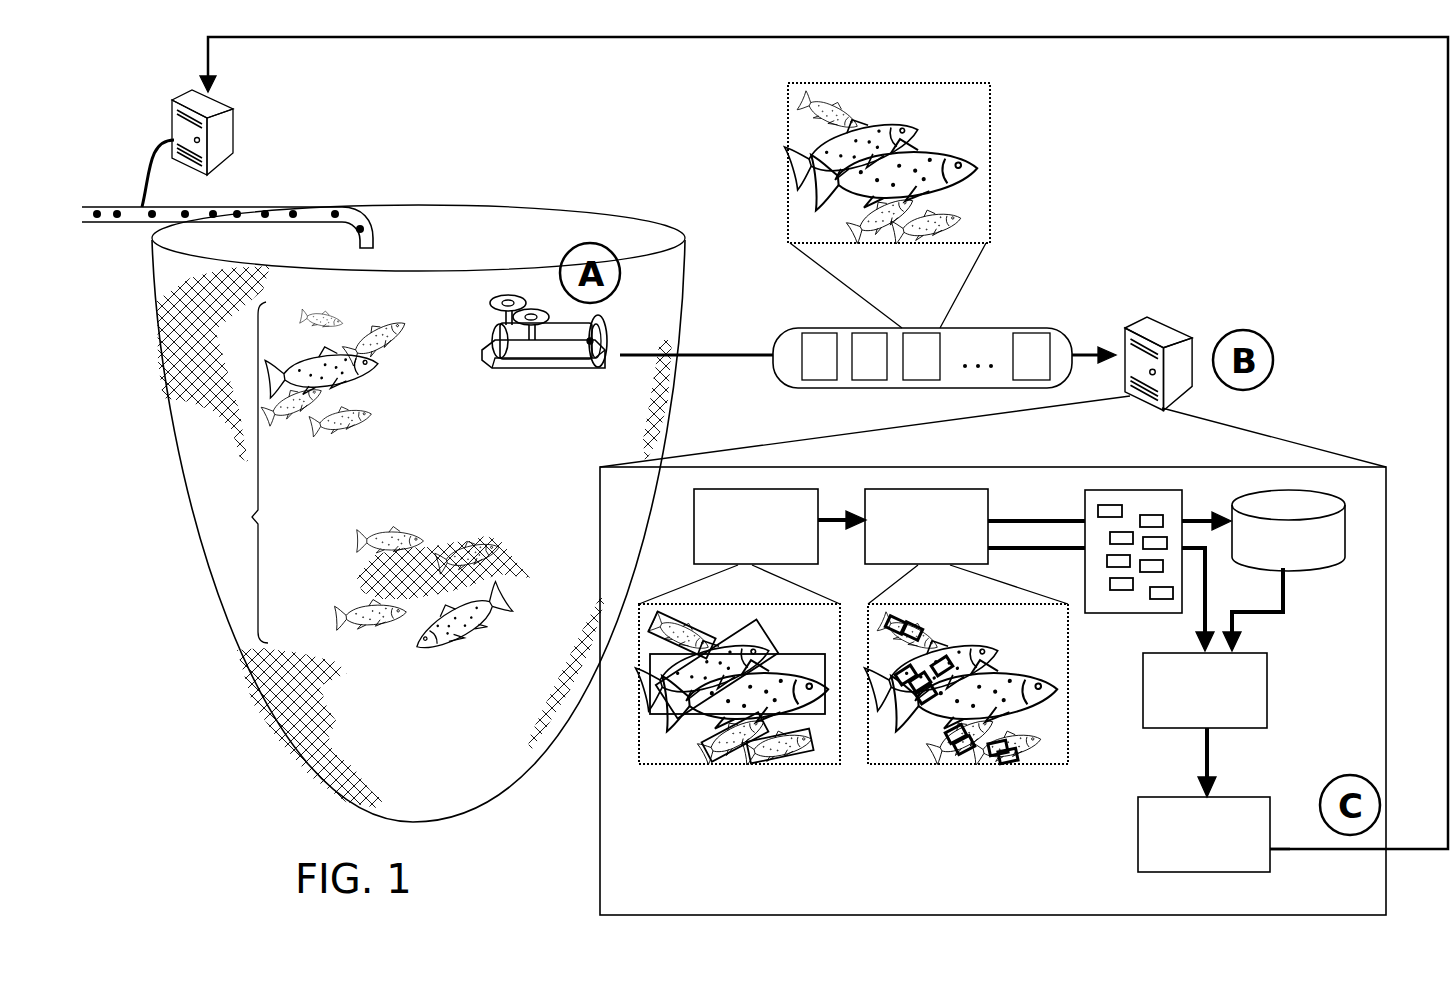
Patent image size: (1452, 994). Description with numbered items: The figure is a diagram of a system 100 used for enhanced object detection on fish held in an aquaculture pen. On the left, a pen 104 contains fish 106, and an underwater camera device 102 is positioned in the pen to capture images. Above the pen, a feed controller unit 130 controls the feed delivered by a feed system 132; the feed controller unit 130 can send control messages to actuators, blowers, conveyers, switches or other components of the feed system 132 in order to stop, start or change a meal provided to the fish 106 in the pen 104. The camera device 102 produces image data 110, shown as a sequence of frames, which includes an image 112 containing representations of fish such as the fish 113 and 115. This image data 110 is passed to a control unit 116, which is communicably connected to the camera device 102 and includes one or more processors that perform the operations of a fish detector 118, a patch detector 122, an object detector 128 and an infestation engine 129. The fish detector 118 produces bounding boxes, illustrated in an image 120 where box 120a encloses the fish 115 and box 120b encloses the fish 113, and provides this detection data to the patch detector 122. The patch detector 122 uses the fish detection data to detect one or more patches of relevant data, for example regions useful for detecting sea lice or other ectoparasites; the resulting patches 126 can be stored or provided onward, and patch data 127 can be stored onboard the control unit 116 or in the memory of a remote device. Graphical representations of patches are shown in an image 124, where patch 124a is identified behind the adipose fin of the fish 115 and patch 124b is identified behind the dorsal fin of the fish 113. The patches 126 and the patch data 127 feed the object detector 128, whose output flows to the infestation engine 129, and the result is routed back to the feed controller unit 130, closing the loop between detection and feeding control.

The system 100 is at (216, 803).
The underwater camera device 102 is at (608, 334).
The pen 104 is at (152, 328).
The fish 106 is at (242, 472).
The image data 110 is at (1064, 328).
The image 112 is at (955, 86).
The fish 113 is at (380, 330).
The fish 115 is at (374, 378).
The control unit 116 is at (1196, 310).
The fish detector 118 is at (800, 494).
The image 120 is at (752, 692).
The box 120a is at (694, 716).
The box 120b is at (678, 670).
The patch detector 122 is at (960, 494).
The image 124 is at (992, 682).
The patch 124a is at (912, 690).
The patch 124b is at (944, 660).
The patches 126 is at (1158, 492).
The patch data 127 is at (1286, 492).
The object detector 128 is at (1267, 681).
The infestation engine 129 is at (1238, 798).
The feed controller unit 130 is at (233, 115).
The feed system 132 is at (210, 207).